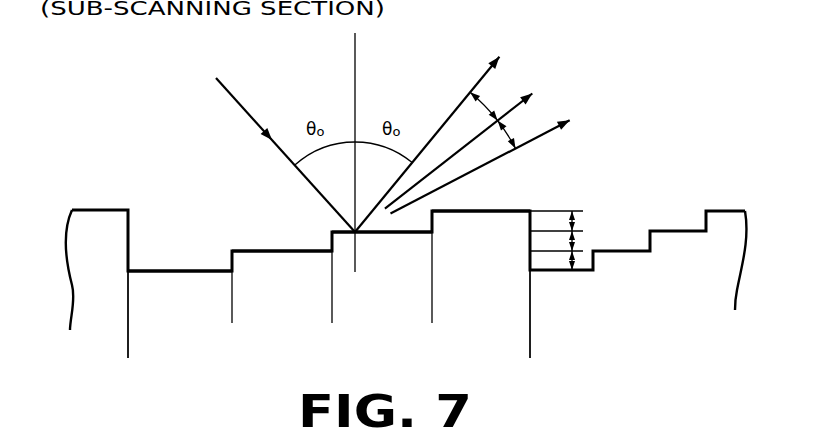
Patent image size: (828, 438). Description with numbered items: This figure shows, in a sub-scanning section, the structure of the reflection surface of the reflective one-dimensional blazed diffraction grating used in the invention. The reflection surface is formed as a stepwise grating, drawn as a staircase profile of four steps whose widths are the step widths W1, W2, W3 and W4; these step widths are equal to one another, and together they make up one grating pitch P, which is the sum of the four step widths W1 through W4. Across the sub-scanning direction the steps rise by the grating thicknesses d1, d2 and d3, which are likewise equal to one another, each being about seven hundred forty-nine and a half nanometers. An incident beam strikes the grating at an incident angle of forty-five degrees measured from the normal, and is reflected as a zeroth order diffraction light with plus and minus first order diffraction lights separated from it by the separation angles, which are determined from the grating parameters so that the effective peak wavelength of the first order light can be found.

The step width W1 is at (232, 316).
The step width W2 is at (332, 316).
The step width W3 is at (432, 316).
The step width W4 is at (530, 316).
The pitch P is at (128, 349).
The grating thickness d1 is at (578, 259).
The grating thickness d2 is at (578, 240).
The grating thickness d3 is at (578, 219).